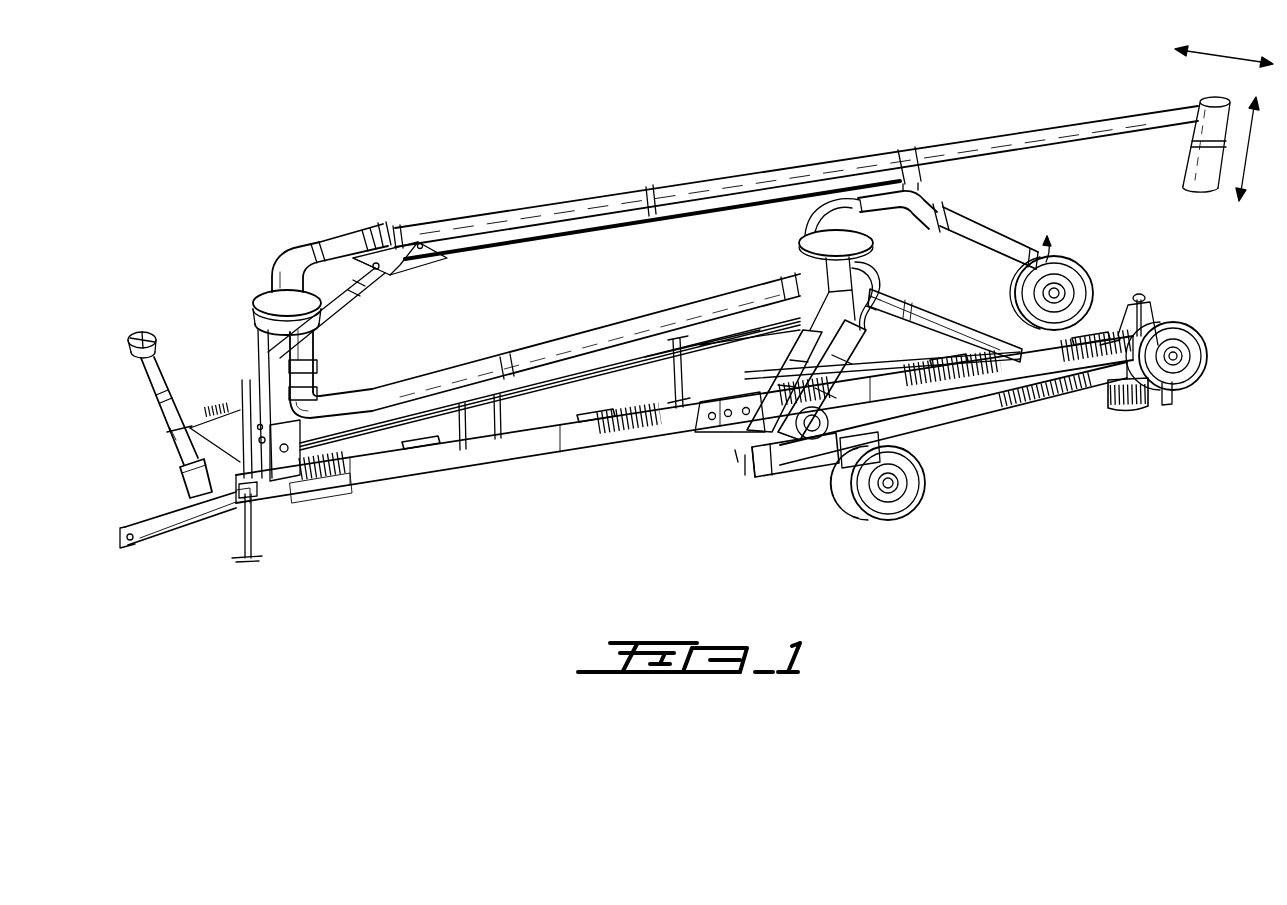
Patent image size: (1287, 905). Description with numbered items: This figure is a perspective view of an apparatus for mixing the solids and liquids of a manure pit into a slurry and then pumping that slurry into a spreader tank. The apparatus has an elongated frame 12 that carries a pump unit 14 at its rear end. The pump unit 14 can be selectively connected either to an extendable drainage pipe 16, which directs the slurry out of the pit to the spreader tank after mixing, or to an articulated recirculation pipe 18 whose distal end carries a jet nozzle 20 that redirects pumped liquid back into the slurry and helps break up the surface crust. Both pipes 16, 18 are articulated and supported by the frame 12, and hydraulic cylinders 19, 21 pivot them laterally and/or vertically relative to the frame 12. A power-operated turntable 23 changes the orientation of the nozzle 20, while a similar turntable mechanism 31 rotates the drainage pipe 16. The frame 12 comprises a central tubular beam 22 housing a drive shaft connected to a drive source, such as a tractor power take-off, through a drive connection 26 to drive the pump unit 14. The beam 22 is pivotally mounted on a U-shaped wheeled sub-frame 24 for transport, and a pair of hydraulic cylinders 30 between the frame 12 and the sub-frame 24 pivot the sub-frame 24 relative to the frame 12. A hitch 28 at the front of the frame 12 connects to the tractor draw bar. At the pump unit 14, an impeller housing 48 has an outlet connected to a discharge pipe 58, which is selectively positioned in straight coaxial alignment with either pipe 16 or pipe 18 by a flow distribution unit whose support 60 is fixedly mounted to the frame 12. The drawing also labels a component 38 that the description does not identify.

The frame 12 is at (564, 462).
The pump unit 14 is at (1172, 297).
The drainage pipe 16 is at (846, 166).
The recirculation pipe 18 is at (830, 226).
The hydraulic cylinder 19 is at (350, 312).
The jet nozzle 20 is at (1032, 247).
The hydraulic cylinder 21 is at (905, 182).
The central tubular beam 22 is at (409, 466).
The turntable 23 is at (798, 240).
The sub-frame 24 is at (994, 420).
The drive connection 26 is at (158, 340).
The hitch 28 is at (177, 537).
The hydraulic cylinders 30 is at (743, 447).
The turntable mechanism 31 is at (274, 291).
The post 38 is at (1141, 290).
The impeller housing 48 is at (1143, 425).
The discharge pipe 58 is at (923, 313).
The support 60 is at (872, 264).